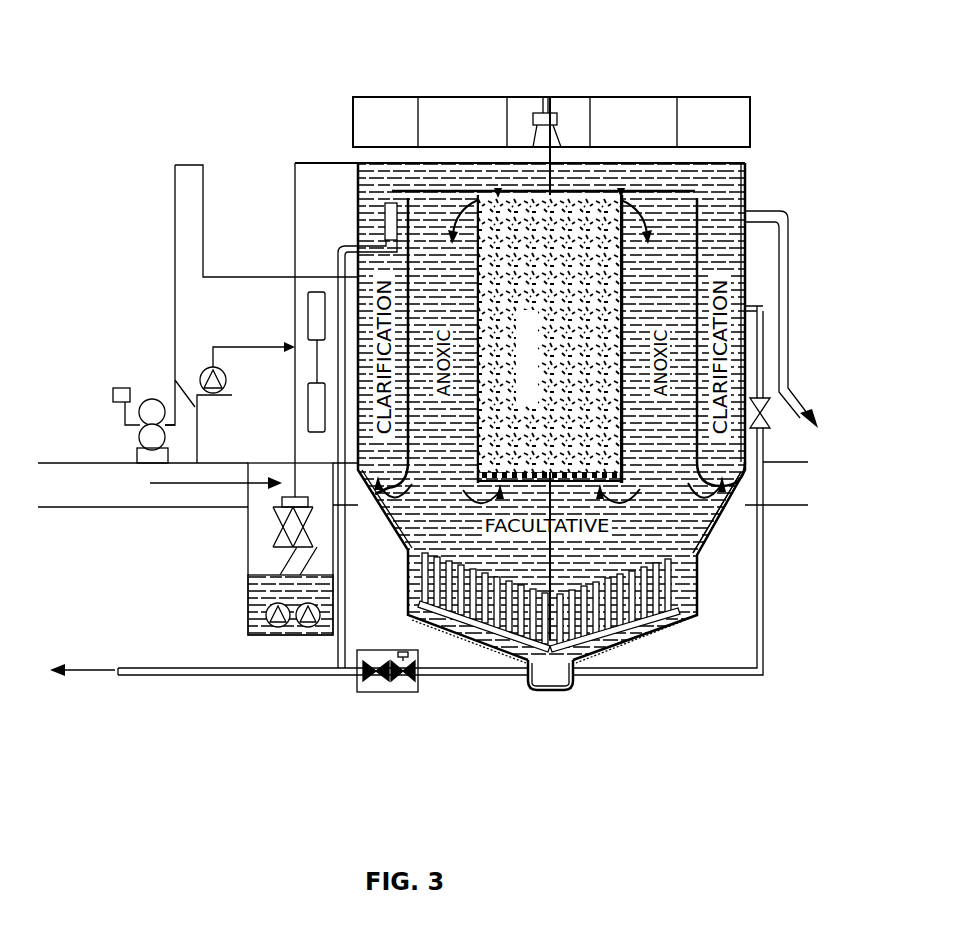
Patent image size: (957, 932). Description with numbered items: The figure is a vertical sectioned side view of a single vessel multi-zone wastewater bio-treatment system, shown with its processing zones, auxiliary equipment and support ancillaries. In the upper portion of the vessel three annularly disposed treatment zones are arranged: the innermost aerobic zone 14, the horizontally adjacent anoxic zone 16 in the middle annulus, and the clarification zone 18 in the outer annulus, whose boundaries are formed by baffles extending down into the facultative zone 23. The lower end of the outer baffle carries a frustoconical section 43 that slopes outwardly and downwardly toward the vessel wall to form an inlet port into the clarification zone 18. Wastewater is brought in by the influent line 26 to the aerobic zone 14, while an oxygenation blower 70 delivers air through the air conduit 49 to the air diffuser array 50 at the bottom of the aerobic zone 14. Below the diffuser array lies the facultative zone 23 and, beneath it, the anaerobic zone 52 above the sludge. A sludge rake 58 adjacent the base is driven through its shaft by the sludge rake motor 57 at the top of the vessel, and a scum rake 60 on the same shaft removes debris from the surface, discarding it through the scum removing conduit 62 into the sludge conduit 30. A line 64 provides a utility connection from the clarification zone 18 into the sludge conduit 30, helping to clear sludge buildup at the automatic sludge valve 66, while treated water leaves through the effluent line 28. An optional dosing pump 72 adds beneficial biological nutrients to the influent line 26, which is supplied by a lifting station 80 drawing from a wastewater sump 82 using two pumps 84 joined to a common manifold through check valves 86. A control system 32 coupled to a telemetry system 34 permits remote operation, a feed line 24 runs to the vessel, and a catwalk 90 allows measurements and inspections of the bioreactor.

The aerobic zone 14 is at (590, 212).
The anoxic zone 16 is at (655, 293).
The clarification zone 18 is at (732, 203).
The facultative zone 23 is at (723, 518).
The feed line 24 is at (294, 257).
The influent line 26 is at (113, 466).
The effluent line 28 is at (788, 255).
The sludge conduit 30 is at (230, 675).
The control system 32 is at (316, 312).
The telemetry system 34 is at (318, 410).
The frustoconical section 43 is at (725, 484).
The air conduit 49 is at (175, 198).
The air diffuser array 50 is at (763, 445).
The anaerobic zone 52 is at (570, 640).
The sludge rake motor 57 is at (540, 113).
The sludge rake 58 is at (623, 637).
The scum rake 60 is at (386, 200).
The scum removing conduit 62 is at (340, 246).
The line 64 is at (763, 603).
The automatic sludge valve 66 is at (358, 693).
The oxygenation blower 70 is at (150, 398).
The dosing pump 72 is at (212, 368).
The lifting station 80 is at (248, 547).
The wastewater sump 82 is at (248, 606).
The pumps 84 is at (308, 630).
The check valves 86 is at (258, 556).
The catwalk 90 is at (640, 97).